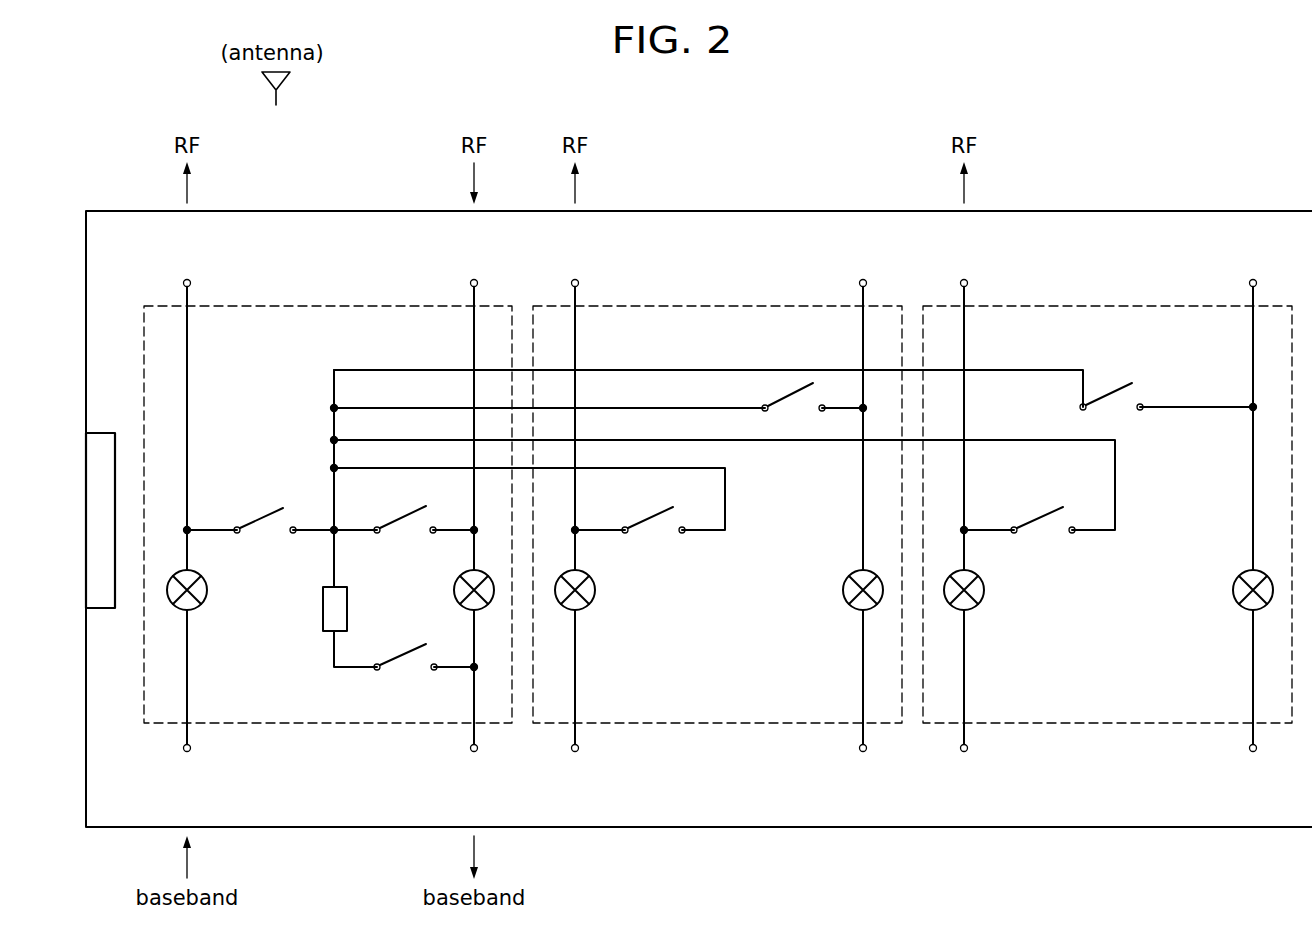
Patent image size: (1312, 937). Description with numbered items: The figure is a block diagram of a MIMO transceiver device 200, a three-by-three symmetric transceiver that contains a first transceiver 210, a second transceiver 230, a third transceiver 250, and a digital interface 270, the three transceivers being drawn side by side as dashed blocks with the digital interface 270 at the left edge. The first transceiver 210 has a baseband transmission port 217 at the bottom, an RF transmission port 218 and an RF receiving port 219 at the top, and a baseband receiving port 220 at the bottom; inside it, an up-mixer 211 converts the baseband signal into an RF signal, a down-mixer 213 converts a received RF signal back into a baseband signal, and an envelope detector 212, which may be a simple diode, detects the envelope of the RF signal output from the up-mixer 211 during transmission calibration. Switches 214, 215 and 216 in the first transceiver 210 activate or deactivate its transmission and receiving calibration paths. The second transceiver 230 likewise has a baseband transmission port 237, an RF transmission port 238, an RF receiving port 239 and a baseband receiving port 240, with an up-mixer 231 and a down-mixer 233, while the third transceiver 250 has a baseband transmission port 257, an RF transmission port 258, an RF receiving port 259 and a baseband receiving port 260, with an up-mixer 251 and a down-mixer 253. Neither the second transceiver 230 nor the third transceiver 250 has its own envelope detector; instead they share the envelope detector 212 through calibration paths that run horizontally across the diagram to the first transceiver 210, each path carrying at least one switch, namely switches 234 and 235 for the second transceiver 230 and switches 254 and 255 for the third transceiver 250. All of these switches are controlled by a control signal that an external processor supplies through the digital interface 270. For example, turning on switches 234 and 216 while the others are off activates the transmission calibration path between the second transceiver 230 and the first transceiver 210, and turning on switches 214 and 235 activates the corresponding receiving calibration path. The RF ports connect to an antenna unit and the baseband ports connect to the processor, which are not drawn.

The MIMO transceiver device 200 is at (1173, 211).
The first transceiver 210 is at (373, 305).
The up-mixer 211 is at (201, 604).
The envelope detector 212 is at (322, 591).
The down-mixer 213 is at (458, 582).
The switch 214 is at (262, 518).
The switch 215 is at (402, 515).
The switch 216 is at (402, 652).
The baseband transmission port 217 is at (187, 752).
The RF transmission port 218 is at (187, 279).
The RF receiving port 219 is at (474, 279).
The baseband receiving port 220 is at (474, 752).
The second transceiver 230 is at (745, 305).
The up-mixer 231 is at (592, 581).
The down-mixer 233 is at (846, 581).
The switch 234 is at (650, 515).
The switch 235 is at (790, 396).
The baseband transmission port 237 is at (575, 752).
The RF transmission port 238 is at (575, 279).
The RF receiving port 239 is at (863, 279).
The baseband receiving port 240 is at (863, 752).
The third transceiver 250 is at (1133, 305).
The up-mixer 251 is at (981, 581).
The down-mixer 253 is at (1236, 581).
The switch 254 is at (1040, 515).
The switch 255 is at (1109, 394).
The baseband transmission port 257 is at (964, 752).
The RF transmission port 258 is at (964, 279).
The RF receiving port 259 is at (1253, 279).
The baseband receiving port 260 is at (1253, 752).
The digital interface 270 is at (100, 520).